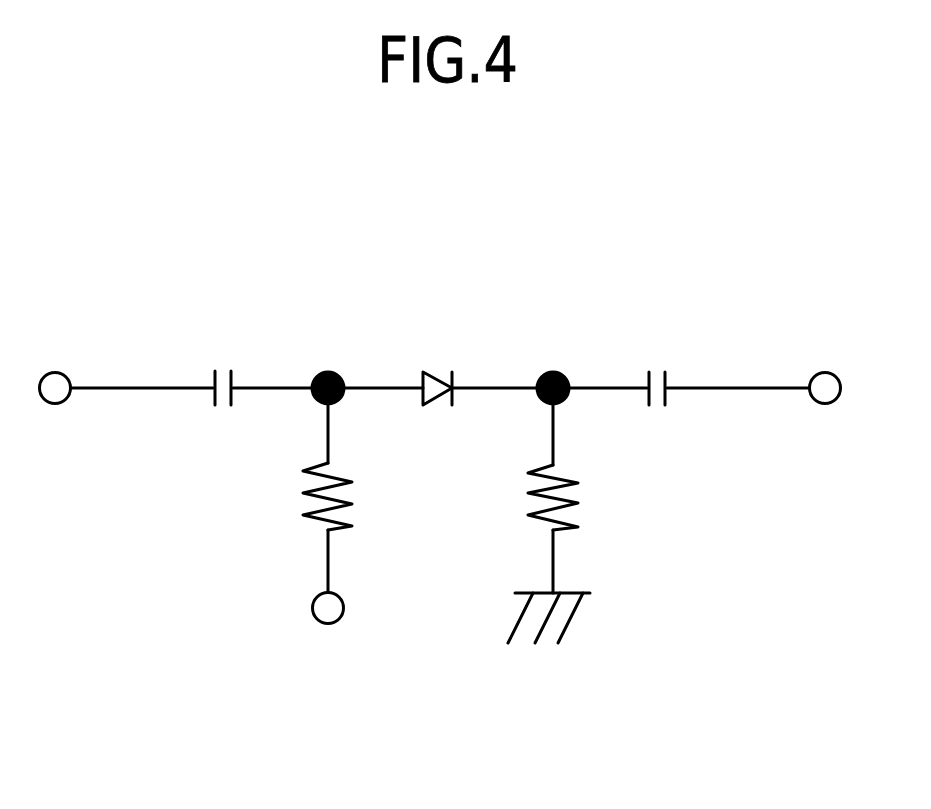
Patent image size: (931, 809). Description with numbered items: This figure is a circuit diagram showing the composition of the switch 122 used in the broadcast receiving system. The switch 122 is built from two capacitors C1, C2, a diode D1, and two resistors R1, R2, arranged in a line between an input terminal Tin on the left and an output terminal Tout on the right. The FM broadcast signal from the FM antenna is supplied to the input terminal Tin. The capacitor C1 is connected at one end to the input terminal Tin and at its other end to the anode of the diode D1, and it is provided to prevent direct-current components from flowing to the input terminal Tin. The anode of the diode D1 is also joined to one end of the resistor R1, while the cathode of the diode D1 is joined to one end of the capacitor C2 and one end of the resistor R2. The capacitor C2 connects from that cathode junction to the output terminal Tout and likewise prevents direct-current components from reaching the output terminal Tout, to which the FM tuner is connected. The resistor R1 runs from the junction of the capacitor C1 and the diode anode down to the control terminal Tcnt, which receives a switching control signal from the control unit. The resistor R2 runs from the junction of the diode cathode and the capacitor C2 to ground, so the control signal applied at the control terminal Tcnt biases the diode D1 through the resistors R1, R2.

The switch 122 is at (121, 243).
The input terminal Tin is at (58, 362).
The output terminal Tout is at (828, 362).
The control terminal Tcnt is at (327, 635).
The capacitor C1 is at (221, 363).
The capacitor C2 is at (656, 363).
The diode D1 is at (433, 363).
The resistor R1 is at (301, 498).
The resistor R2 is at (579, 498).